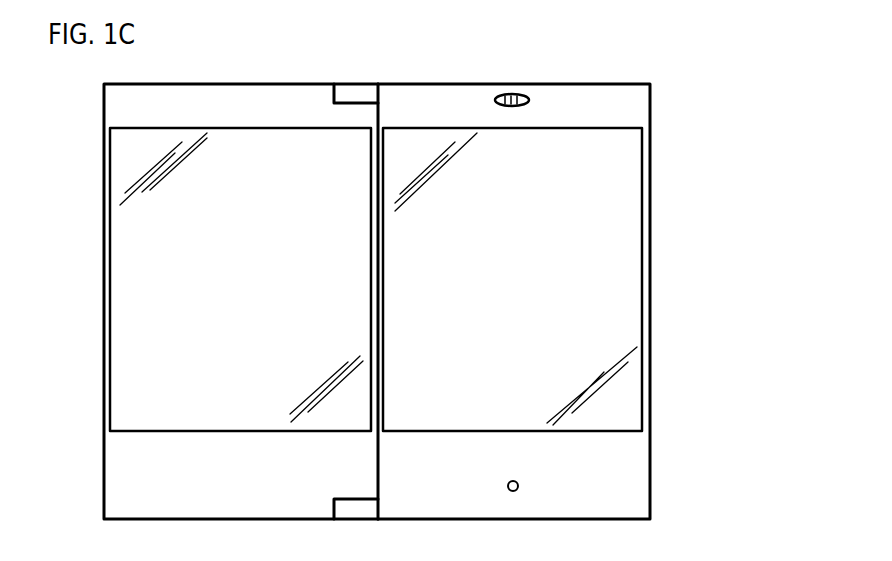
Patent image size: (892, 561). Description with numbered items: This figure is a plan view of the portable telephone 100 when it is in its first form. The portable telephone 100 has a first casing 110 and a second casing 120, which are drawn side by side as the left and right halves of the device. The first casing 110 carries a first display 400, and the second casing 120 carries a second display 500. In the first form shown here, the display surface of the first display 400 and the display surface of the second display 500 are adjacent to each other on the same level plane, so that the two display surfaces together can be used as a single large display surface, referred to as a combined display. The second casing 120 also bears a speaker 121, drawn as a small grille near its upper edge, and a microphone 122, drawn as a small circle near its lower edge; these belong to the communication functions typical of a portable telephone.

The portable telephone 100 is at (586, 78).
The first casing 110 is at (213, 83).
The second casing 120 is at (443, 83).
The speaker 121 is at (529, 98).
The microphone 122 is at (518, 486).
The first display 400 is at (350, 253).
The second display 500 is at (627, 343).